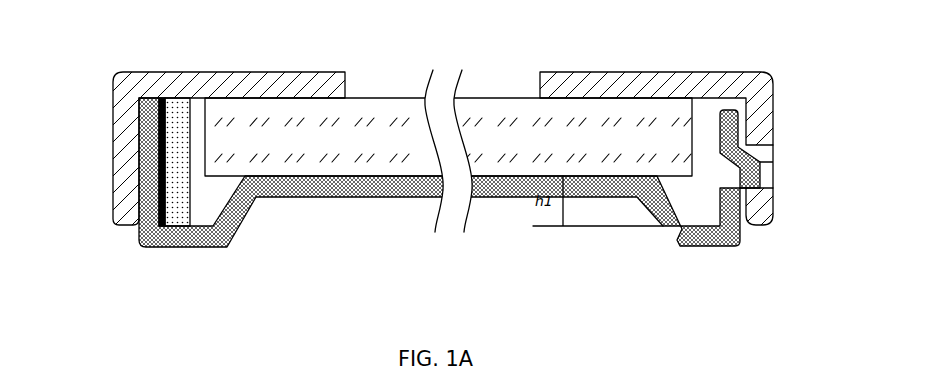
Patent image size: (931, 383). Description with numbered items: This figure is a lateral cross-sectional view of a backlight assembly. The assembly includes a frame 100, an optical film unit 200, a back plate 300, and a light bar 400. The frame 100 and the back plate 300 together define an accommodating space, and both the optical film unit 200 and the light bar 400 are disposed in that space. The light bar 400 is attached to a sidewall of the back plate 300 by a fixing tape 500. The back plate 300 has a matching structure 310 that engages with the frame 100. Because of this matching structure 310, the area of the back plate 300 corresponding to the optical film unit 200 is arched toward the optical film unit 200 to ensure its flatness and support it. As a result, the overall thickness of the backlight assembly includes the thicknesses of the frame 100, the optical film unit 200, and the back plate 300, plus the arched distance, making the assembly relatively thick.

The frame 100 is at (220, 72).
The optical film unit 200 is at (407, 107).
The back plate 300 is at (163, 246).
The matching structure 310 is at (760, 167).
The light bar 400 is at (165, 144).
The fixing tape 500 is at (159, 187).